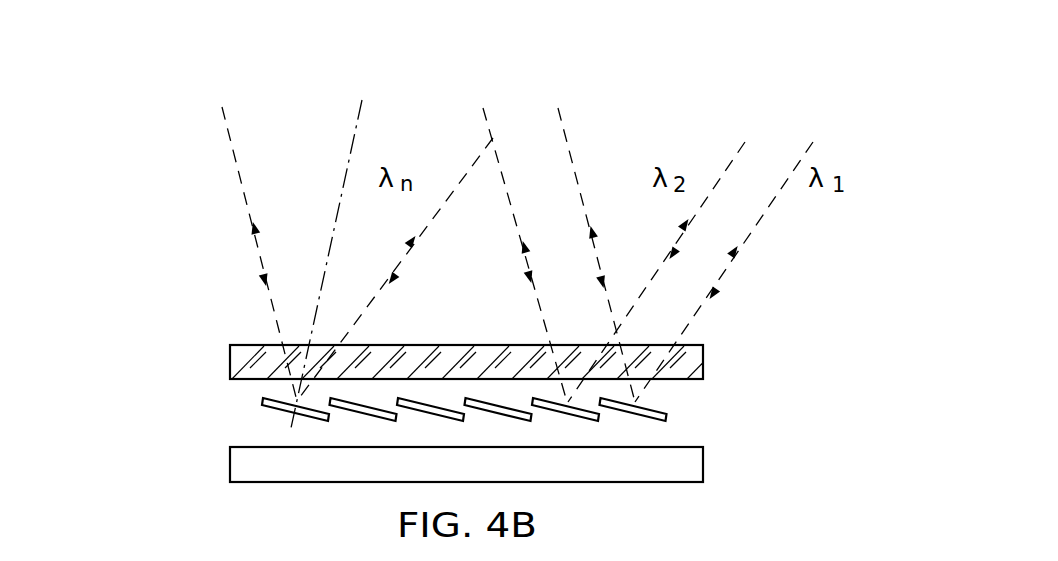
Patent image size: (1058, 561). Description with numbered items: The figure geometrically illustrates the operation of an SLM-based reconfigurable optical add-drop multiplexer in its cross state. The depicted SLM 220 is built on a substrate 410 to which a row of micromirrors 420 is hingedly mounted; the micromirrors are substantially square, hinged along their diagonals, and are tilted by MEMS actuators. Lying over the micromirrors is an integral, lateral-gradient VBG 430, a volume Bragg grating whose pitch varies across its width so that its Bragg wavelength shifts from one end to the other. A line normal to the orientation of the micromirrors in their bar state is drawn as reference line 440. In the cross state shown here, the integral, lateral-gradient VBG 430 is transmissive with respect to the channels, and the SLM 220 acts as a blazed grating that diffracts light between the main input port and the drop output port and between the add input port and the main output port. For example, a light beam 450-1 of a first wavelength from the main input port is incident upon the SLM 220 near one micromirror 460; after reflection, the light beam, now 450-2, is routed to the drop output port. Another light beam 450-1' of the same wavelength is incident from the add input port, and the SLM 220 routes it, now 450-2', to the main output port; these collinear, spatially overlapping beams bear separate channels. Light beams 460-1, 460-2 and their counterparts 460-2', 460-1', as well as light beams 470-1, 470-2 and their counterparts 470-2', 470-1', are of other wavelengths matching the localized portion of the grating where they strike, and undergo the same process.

The SLM 220 is at (178, 248).
The substrate 410 is at (230, 462).
The micromirrors 420 is at (217, 407).
The integral, lateral-gradient VBG 430 is at (230, 362).
The line normal to the orientation of the micromirrors 440 is at (358, 119).
The micromirror 460 is at (668, 421).
The light beam 450-1 is at (648, 244).
The light beam 450-2 is at (791, 272).
The light beam 460-1 is at (485, 217).
The light beam 460-2 is at (757, 251).
The light beam 470-1 is at (177, 254).
The light beam 470-2 is at (398, 269).
The light beam 470-2' is at (177, 254).
The light beam 470-1' is at (398, 269).
The light beam 460-2' is at (485, 217).
The light beam 460-1' is at (757, 251).
The light beam 450-2' is at (648, 244).
The light beam 450-1' is at (791, 272).